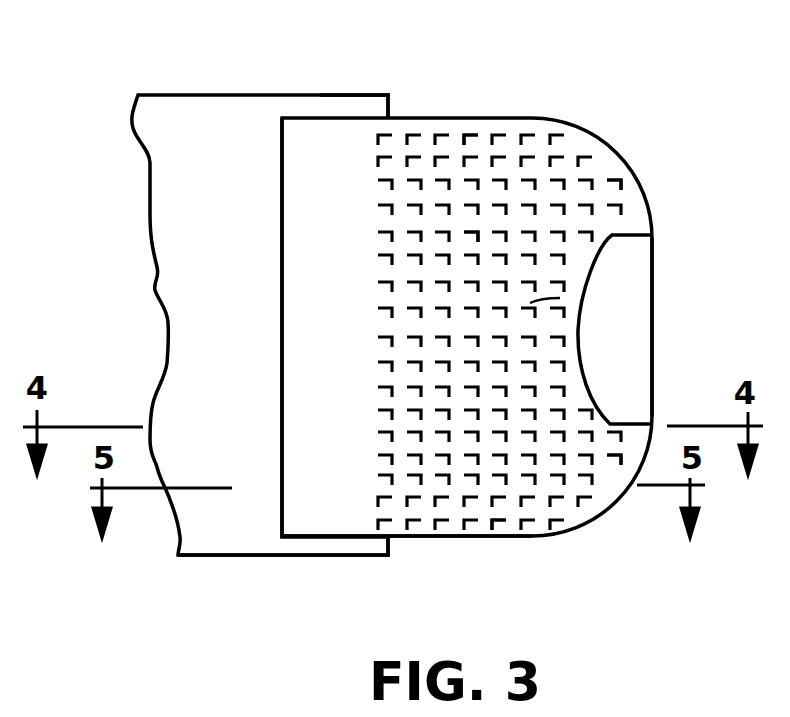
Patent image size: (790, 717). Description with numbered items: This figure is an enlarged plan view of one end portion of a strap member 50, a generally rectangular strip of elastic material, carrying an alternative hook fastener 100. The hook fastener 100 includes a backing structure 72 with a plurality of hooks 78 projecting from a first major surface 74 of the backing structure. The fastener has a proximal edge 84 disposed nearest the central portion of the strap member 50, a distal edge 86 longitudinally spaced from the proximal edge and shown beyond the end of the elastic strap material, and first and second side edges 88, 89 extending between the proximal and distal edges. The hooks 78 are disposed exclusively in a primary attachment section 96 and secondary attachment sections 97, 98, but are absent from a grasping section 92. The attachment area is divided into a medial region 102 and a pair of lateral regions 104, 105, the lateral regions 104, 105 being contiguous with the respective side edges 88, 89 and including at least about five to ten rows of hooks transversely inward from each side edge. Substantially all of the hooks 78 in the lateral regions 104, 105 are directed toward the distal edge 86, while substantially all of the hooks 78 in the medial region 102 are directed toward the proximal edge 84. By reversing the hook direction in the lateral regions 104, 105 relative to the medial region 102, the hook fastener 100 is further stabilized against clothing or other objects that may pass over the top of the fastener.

The strap member 50 is at (118, 108).
The backing structure 72 is at (300, 318).
The first major surface 74 is at (300, 373).
The hooks 78 is at (563, 180).
The proximal edge 84 is at (282, 498).
The distal edge 86 is at (658, 258).
The first side edge 88 is at (498, 117).
The second side edge 89 is at (440, 545).
The grasping section 92 is at (622, 371).
The primary attachment section 96 is at (465, 238).
The secondary attachment section 97 is at (603, 197).
The secondary attachment section 98 is at (625, 462).
The hook fastener 100 is at (323, 117).
The medial region 102 is at (560, 298).
The lateral region 104 is at (470, 153).
The lateral region 105 is at (500, 500).